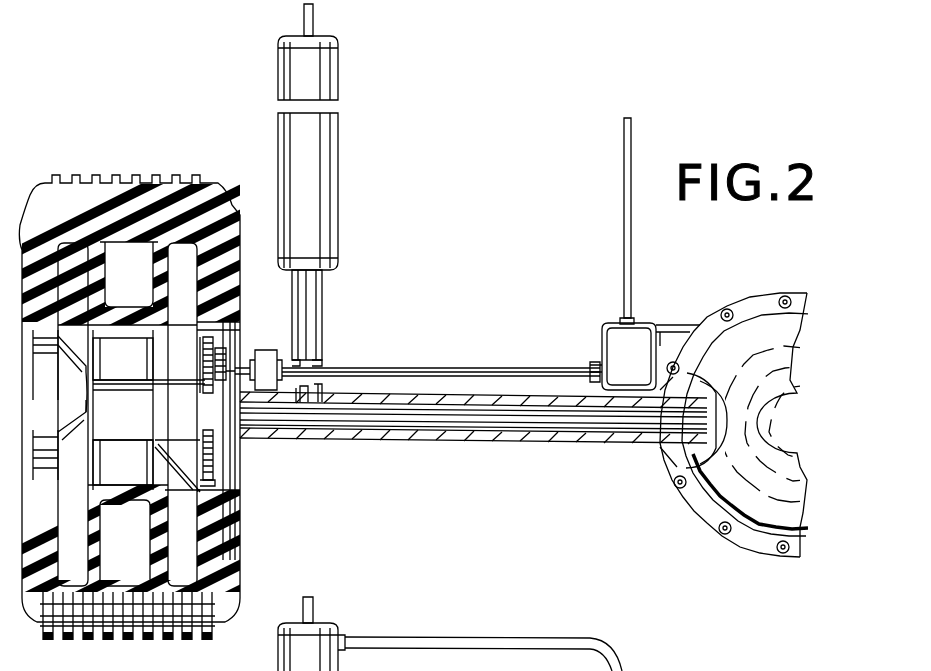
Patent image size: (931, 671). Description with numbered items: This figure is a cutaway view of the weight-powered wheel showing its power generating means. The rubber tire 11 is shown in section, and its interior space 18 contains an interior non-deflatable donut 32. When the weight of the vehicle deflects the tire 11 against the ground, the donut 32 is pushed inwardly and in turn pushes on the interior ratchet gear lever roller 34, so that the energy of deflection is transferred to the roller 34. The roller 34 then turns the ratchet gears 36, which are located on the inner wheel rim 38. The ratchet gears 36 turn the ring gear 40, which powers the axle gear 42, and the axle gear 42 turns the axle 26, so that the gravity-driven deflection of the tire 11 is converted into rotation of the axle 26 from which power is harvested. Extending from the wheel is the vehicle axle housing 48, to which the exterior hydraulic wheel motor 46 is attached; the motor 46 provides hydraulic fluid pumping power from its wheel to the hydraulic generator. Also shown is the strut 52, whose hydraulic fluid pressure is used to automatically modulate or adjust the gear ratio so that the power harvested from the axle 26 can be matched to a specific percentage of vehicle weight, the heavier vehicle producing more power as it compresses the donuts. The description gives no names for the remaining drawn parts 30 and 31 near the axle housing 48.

The tire 11 is at (150, 177).
The interior space 18 is at (88, 334).
The axle 26 is at (432, 366).
The actuator housing 30 is at (604, 342).
The rod 31 is at (623, 153).
The interior non-deflatable donut 32 is at (140, 287).
The interior ratchet gear lever roller 34 is at (122, 342).
The ratchet gears 36 is at (206, 432).
The inner wheel rim 38 is at (138, 429).
The ring gear 40 is at (180, 498).
The axle gear 42 is at (215, 360).
The exterior hydraulic wheel motor 46 is at (268, 352).
The vehicle axle housing 48 is at (479, 440).
The strut 52 is at (338, 156).